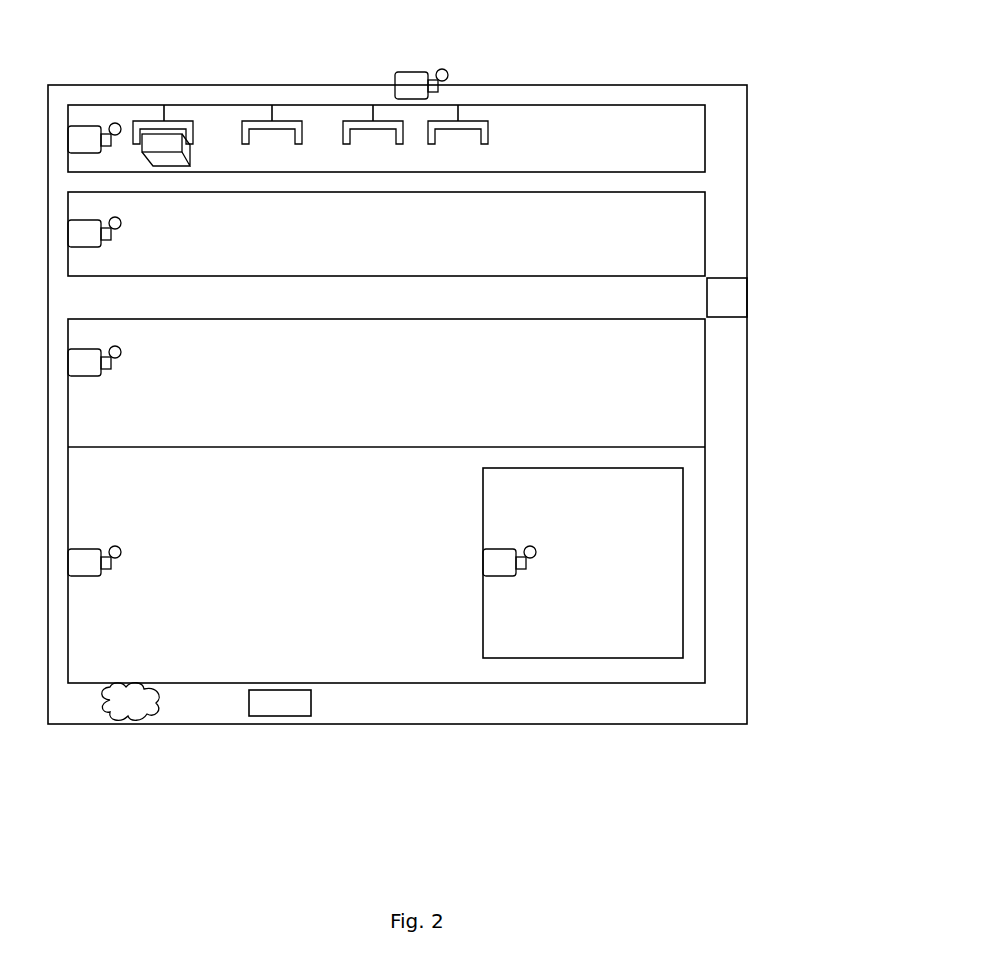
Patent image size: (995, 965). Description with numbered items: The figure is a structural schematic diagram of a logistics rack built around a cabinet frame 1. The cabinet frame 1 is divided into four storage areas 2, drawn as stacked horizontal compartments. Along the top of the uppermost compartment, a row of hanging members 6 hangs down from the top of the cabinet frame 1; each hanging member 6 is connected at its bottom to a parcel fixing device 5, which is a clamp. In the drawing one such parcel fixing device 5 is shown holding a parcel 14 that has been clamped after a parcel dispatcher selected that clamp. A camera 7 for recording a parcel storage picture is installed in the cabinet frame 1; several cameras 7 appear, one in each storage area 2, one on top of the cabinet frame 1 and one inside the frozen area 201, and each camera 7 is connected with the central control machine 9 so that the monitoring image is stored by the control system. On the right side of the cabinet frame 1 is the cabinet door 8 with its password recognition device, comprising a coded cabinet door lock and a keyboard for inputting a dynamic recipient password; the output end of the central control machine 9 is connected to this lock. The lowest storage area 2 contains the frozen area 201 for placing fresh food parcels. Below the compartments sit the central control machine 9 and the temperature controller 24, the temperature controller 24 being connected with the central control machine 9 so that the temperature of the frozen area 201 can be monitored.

The cabinet frame 1 is at (100, 77).
The storage areas 2 is at (620, 106).
The parcel fixing device 5 is at (149, 113).
The parcel 14 is at (185, 133).
The hanging member 6 is at (287, 107).
The camera 7 is at (417, 65).
The cabinet door with password recognition device 8 is at (746, 292).
The frozen area 201 is at (672, 573).
The central control machine 9 is at (142, 709).
The temperature controller 24 is at (301, 716).